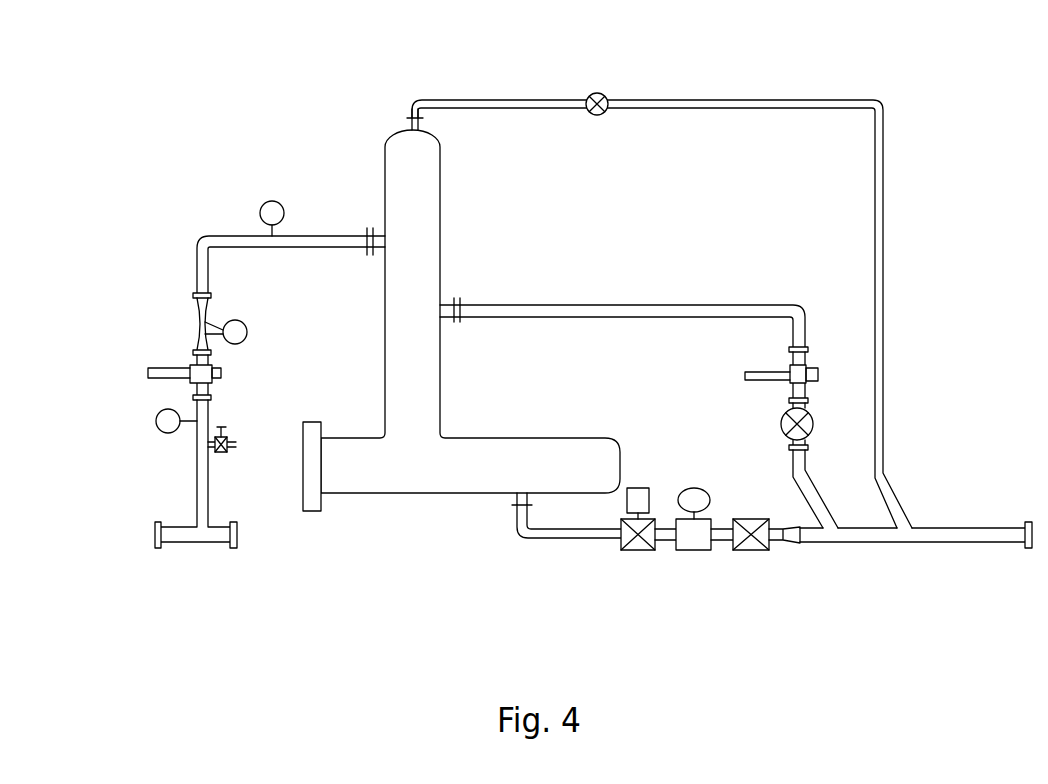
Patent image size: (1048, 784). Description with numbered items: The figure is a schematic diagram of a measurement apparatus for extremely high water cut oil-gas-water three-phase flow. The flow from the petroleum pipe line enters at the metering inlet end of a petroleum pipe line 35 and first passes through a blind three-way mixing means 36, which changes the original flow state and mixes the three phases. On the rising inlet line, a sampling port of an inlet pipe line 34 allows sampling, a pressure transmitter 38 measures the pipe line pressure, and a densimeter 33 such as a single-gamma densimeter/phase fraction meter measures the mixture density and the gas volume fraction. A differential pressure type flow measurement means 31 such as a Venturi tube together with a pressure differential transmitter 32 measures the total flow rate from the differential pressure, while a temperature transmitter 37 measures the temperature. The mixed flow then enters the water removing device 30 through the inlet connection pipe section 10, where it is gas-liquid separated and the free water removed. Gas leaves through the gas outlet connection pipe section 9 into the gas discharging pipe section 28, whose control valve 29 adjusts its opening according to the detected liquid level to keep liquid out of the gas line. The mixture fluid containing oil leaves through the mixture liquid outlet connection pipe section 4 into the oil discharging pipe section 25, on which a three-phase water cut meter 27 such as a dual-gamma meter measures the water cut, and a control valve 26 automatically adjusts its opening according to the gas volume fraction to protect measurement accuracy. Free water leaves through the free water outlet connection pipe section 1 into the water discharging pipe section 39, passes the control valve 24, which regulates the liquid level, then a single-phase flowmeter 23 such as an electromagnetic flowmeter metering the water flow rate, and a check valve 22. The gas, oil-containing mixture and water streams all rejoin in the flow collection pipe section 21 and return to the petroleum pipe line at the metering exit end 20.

The free water outlet connection pipe section 1 is at (514, 505).
The mixture liquid outlet connection pipe section 4 is at (457, 308).
The gas outlet connection pipe section 9 is at (408, 118).
The inlet connection pipe section 10 is at (367, 230).
The petroleum pipe line metering exit end 20 is at (1026, 550).
The flow collection pipe section 21 is at (988, 528).
The check valve 22 is at (757, 523).
The single-phase flowmeter 23 is at (698, 523).
The control valve of the water discharging pipe section 24 is at (622, 547).
The oil discharging pipe section 25 is at (810, 487).
The control valve in the oil discharging pipe section 26 is at (813, 423).
The three-phase water cut meter 27 is at (813, 370).
The gas discharging pipe section 28 is at (883, 192).
The control valve of the gas discharging pipe section 29 is at (599, 93).
The water removing device 30 is at (410, 205).
The differential pressure type flow measurement means 31 is at (205, 312).
The pressure differential transmitter 32 is at (223, 335).
The densimeter 33 is at (148, 375).
The sampling port of an inlet pipe line 34 is at (213, 447).
The metering inlet end of a petroleum pipe line 35 is at (155, 547).
The blind three-way mixing means 36 is at (207, 537).
The temperature transmitter 37 is at (262, 207).
The pressure transmitter 38 is at (160, 428).
The water discharging pipe section 39 is at (563, 533).